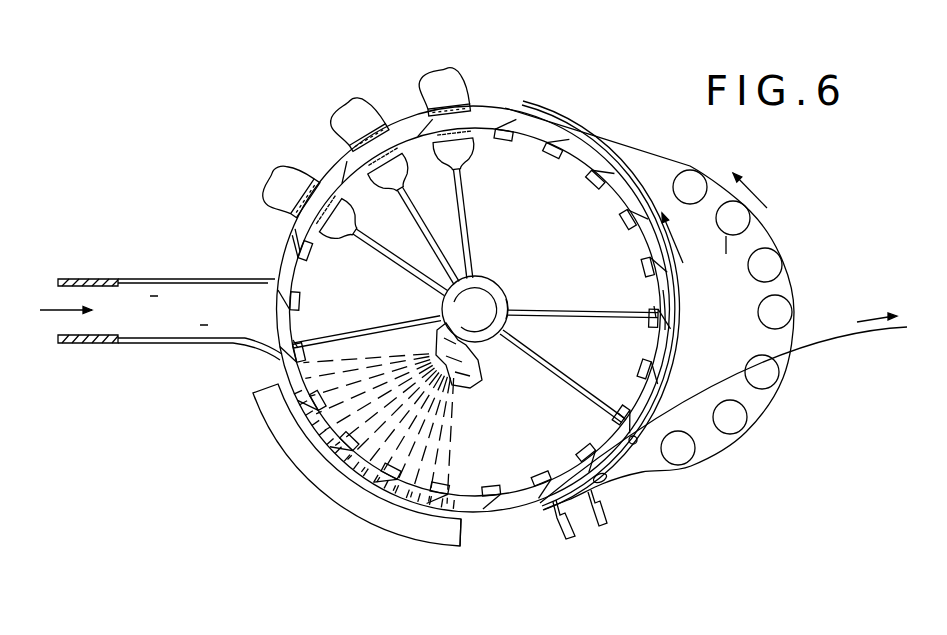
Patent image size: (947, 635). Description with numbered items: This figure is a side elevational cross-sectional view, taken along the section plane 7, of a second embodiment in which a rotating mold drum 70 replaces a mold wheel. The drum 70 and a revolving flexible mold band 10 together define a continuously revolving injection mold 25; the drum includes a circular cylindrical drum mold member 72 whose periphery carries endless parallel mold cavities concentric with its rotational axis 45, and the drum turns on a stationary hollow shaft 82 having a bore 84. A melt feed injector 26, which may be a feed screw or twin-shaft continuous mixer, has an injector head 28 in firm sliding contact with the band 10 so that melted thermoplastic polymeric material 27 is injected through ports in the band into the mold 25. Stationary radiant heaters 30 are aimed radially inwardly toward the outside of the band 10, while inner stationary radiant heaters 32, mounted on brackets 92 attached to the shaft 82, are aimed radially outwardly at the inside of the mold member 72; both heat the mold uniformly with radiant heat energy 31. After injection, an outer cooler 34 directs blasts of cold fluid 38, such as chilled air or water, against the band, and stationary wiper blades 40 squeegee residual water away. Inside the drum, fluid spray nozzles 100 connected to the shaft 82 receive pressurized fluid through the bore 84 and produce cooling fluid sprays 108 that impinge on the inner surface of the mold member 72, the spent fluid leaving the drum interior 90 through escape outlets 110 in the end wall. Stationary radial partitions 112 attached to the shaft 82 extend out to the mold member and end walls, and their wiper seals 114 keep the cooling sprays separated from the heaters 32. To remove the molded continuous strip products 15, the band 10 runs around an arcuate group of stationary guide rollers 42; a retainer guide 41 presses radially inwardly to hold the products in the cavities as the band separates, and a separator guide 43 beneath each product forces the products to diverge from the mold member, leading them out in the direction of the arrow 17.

The section plane 7- 7 is at (500, 33).
The mold band 10 is at (668, 485).
The continuous strip products 15 is at (879, 333).
The arrow 17 is at (857, 322).
The continuously revolving injection mold 25 is at (275, 245).
The melt feed injector 26 is at (154, 279).
The melted thermoplastic polymeric material 27 is at (40, 310).
The injector head 28 is at (271, 302).
The heaters 30 is at (430, 92).
The radiant heat energy 31 is at (472, 108).
The stationary radiant heaters 32 is at (468, 172).
The outer cooler 34 is at (310, 470).
The cold fluid 38 is at (463, 527).
The stationary wiper blades 40 is at (577, 537).
The retainer guide 41 is at (607, 476).
The stationary guide rollers 42 is at (758, 310).
The separator guide 43 is at (640, 436).
The rotational axis 45 is at (485, 292).
The rotating mold drum 70 is at (632, 182).
The cylindrical drum mold member 72 is at (620, 172).
The stationary hollow shaft 82 is at (480, 303).
The bore 84 is at (511, 311).
The drum interior 90 is at (674, 316).
The brackets 92 is at (443, 240).
The fluid spray nozzles 100 is at (466, 355).
The cooling fluid sprays 108 is at (383, 420).
The escape outlets 110 is at (516, 112).
The stationary radial partitions 112 is at (354, 335).
The wiper seals 114 is at (297, 342).